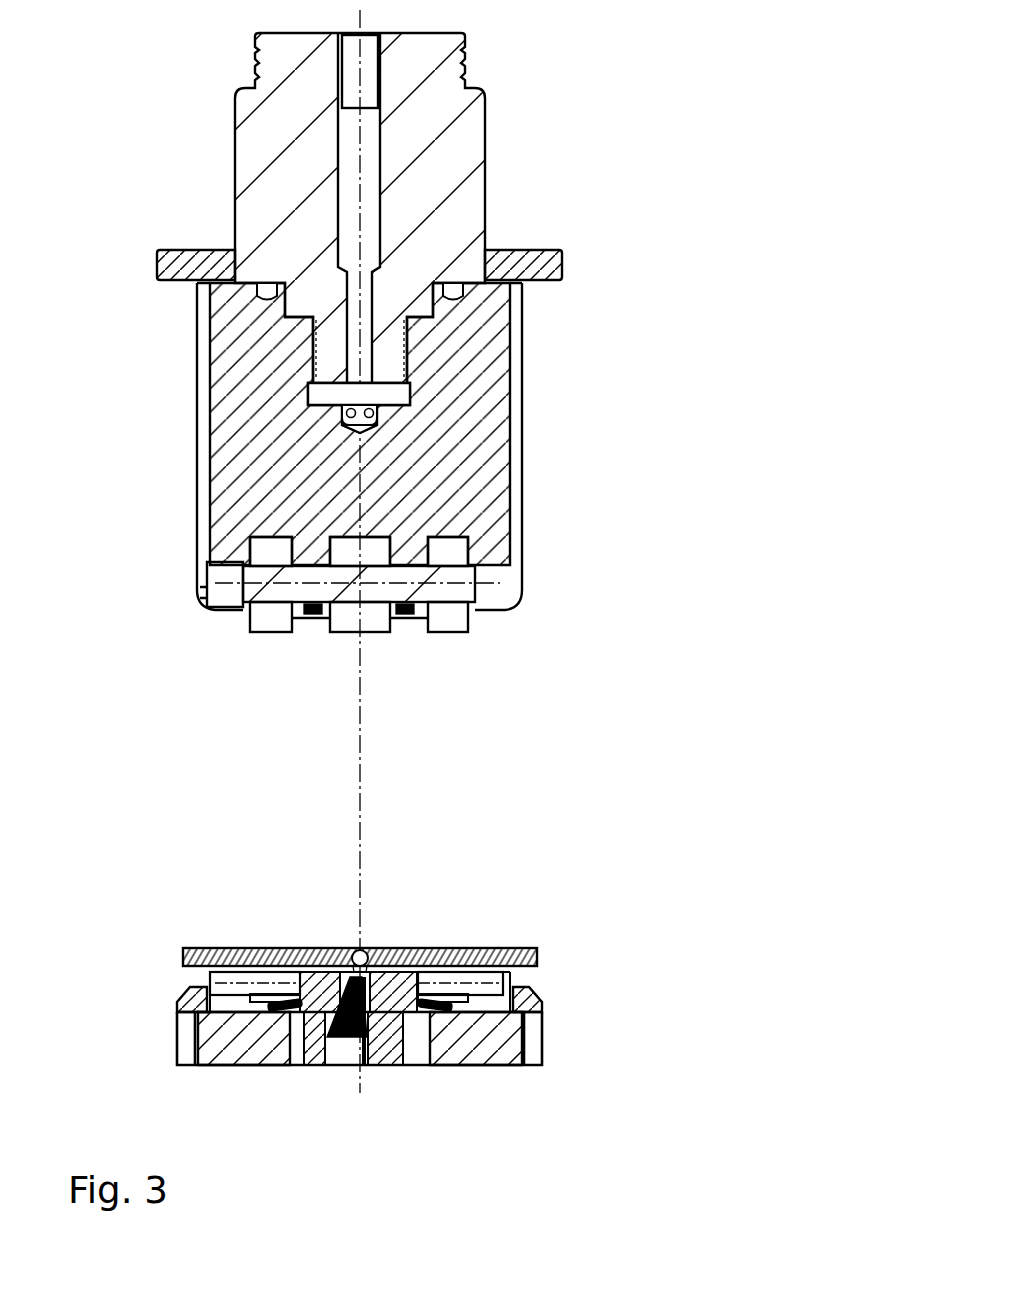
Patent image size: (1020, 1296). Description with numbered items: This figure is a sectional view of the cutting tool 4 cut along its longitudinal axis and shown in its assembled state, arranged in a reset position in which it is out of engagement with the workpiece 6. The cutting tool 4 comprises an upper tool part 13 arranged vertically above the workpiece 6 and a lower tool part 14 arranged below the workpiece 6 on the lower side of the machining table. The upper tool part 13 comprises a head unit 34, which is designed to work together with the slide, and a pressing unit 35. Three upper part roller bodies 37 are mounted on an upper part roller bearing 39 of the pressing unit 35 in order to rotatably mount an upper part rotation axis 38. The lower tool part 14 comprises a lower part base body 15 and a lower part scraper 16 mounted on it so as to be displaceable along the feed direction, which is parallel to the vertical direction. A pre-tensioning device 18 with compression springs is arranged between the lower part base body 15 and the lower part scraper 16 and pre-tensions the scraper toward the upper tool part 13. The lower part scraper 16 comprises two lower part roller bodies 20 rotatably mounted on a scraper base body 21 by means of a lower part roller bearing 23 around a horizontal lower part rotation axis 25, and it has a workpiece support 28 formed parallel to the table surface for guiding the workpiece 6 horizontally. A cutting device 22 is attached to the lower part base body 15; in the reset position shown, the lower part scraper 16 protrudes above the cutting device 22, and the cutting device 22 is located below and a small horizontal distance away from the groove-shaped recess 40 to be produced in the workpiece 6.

The cutting tool 4 is at (725, 611).
The workpiece 6 is at (537, 957).
The upper tool part 13 is at (609, 321).
The lower tool part 14 is at (592, 1006).
The lower part base body 15 is at (227, 1069).
The lower part scraper 16 is at (386, 1004).
The pre-tensioning device 18 is at (462, 996).
The lower part roller bodies 20 is at (457, 1007).
The scraper base body 21 is at (322, 1000).
The cutting device 22 is at (347, 967).
The lower part roller bearing 23 is at (233, 973).
The lower part rotation axis 25 is at (256, 980).
The workpiece support 28 is at (370, 950).
The head unit 34 is at (470, 139).
The pressing unit 35 is at (495, 415).
The upper part roller bodies 37 is at (278, 622).
The upper part rotation axis 38 is at (218, 612).
The upper part roller bearing 39 is at (463, 578).
The groove-shaped recess 40 is at (340, 948).